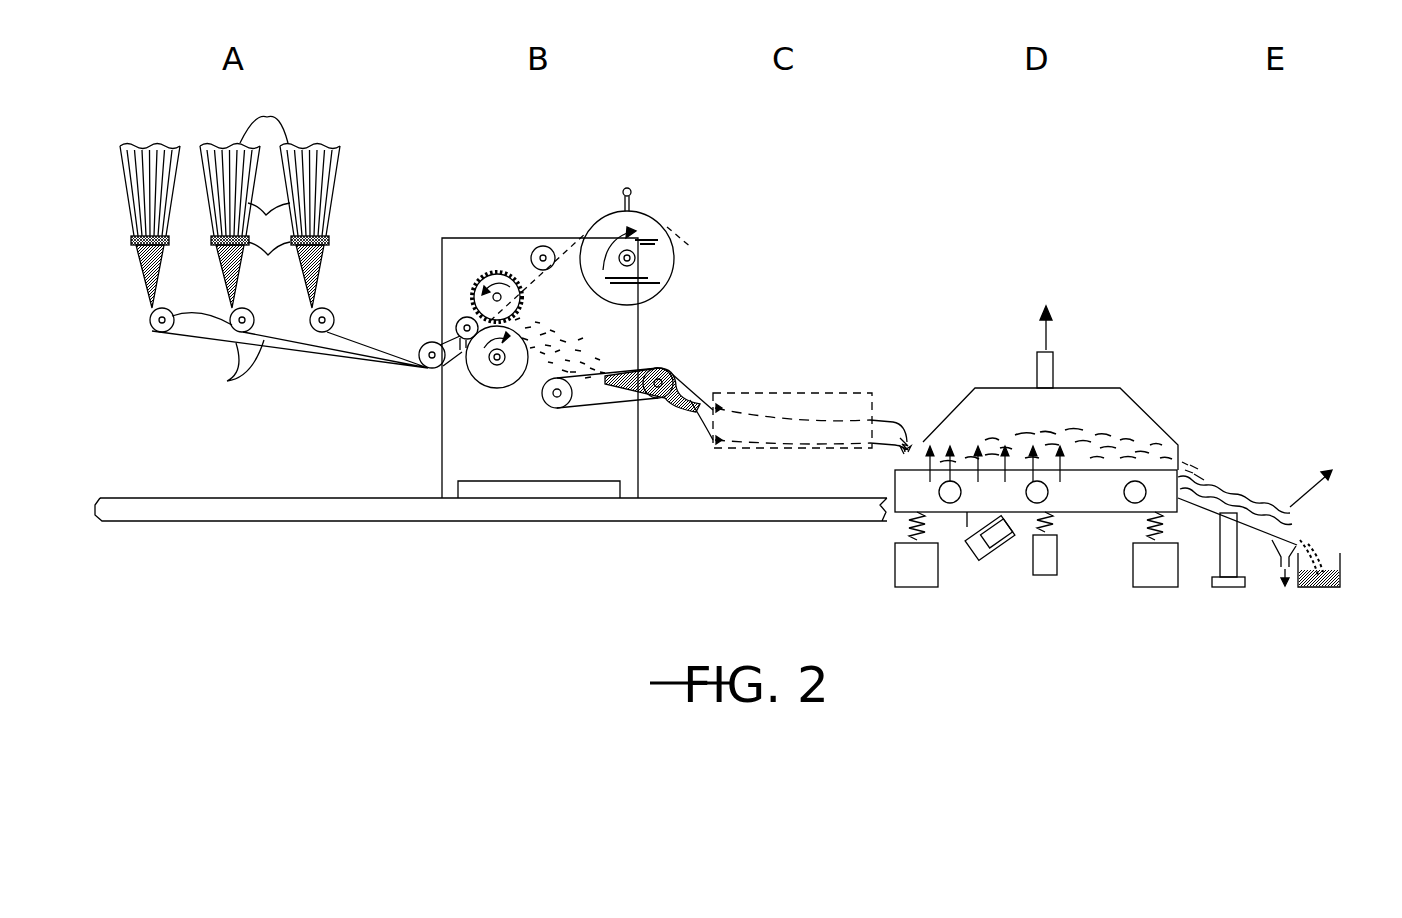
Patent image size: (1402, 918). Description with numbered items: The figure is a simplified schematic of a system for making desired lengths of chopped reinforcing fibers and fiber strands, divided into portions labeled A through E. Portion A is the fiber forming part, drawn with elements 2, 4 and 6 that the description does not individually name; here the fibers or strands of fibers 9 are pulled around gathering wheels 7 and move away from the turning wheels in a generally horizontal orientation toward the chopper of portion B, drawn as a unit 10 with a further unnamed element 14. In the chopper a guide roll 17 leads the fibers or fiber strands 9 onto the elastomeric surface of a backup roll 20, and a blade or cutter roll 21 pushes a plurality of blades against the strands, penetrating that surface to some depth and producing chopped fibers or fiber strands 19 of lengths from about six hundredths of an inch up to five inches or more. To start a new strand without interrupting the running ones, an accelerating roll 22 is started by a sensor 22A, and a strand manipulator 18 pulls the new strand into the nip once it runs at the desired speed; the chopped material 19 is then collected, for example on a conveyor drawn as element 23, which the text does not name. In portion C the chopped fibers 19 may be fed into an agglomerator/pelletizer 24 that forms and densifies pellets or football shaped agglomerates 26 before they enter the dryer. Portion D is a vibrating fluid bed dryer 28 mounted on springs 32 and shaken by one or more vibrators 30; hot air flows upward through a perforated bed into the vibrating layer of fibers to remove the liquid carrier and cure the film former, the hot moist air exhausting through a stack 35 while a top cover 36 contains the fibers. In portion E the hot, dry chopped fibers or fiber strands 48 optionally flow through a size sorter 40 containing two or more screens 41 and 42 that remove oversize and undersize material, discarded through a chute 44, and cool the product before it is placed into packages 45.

The fiber tow packages (creels) 2 is at (132, 151).
The fiber tows 4 is at (267, 117).
The tow spacing 6 is at (268, 255).
The gathering wheels 7 is at (203, 315).
The fibers or fiber strands 9 is at (227, 381).
The chopper unit 10 is at (440, 238).
The feed roller 14 is at (459, 321).
The guide roll 17 is at (424, 344).
The strand manipulator 18 is at (539, 247).
The chopped fibers or fiber strands 19 is at (575, 343).
The backup roll 20 is at (500, 372).
The blade or cutter roll 21 is at (516, 299).
The accelerating roll 22 is at (648, 228).
The sensor 22A is at (627, 187).
The conveyor belt 23 is at (618, 388).
The agglomerator/pelletizer 24 is at (760, 384).
The densified pellets or football shaped agglomerates 26 is at (904, 438).
The vibrating fluid bed dryer 28 is at (1113, 390).
The vibrators 30 is at (978, 548).
The springs 32 is at (1148, 524).
The stack 35 is at (1055, 354).
The top cover 36 is at (991, 388).
The size sorter 40 is at (1266, 492).
The screen 41 is at (1322, 477).
The screen 42 is at (1305, 530).
The chute 44 is at (1273, 548).
The packages 45 is at (1342, 572).
The hot, dry chopped fibers or fiber strands 48 is at (1190, 466).